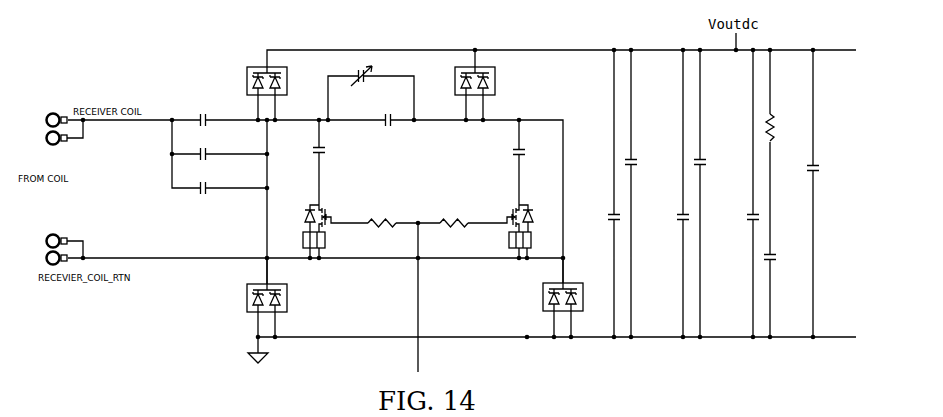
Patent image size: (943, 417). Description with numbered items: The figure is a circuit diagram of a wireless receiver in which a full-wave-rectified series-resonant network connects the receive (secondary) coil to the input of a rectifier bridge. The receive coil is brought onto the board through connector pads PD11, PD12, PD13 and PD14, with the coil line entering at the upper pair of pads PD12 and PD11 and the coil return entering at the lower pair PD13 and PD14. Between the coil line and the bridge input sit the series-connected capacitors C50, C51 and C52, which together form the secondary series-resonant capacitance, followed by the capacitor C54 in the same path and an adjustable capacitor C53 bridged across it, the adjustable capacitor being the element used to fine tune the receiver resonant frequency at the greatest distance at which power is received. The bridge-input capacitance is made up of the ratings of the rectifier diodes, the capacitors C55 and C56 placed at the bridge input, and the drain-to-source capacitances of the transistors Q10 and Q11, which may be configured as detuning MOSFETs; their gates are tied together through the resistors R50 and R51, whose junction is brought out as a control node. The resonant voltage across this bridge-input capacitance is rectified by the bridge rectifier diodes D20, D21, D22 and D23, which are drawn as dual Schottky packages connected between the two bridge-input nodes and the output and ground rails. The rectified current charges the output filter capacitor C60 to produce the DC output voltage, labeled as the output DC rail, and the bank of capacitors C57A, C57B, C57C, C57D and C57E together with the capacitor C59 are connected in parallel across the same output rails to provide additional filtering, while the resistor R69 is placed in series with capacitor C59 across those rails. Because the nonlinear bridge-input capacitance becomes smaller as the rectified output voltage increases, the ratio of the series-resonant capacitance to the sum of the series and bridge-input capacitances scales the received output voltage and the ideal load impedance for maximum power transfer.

The receiver coil connector pad PD11 is at (47, 132).
The receiver coil connector pad PD12 is at (53, 113).
The receiver coil return connector pad PD13 is at (59, 239).
The receiver coil return connector pad PD14 is at (39, 258).
The capacitor 33PF 500V C50 is at (213, 116).
The capacitor 1PF 500V C51 is at (219, 152).
The capacitor NF 500V C52 is at (219, 186).
The variable capacitor C53 is at (371, 89).
The capacitor N/F 50V C54 is at (386, 116).
The capacitor N/F 100V C55 is at (332, 155).
The capacitor N/F 100V C56 is at (532, 159).
The capacitor 47N 100V C57A is at (600, 213).
The capacitor 47N 100V C57B is at (644, 159).
The capacitor 47N 100V C57C is at (668, 213).
The capacitor 47N 100V C57D is at (713, 159).
The capacitor 47N 100V C57E is at (737, 213).
The capacitor 1U0 100V C59 is at (783, 255).
The output filter capacitor C60 is at (822, 167).
The resistor 1R00 0W25 R69 is at (783, 121).
The bridge rectifier diode D20 is at (246, 91).
The bridge rectifier diode D21 is at (493, 85).
The bridge rectifier diode D22 is at (239, 297).
The bridge rectifier diode D23 is at (569, 297).
The transistor Q10 is at (338, 221).
The transistor Q11 is at (488, 221).
The gate resistor 10R0 R50 is at (381, 224).
The gate resistor 10R0 R51 is at (453, 224).